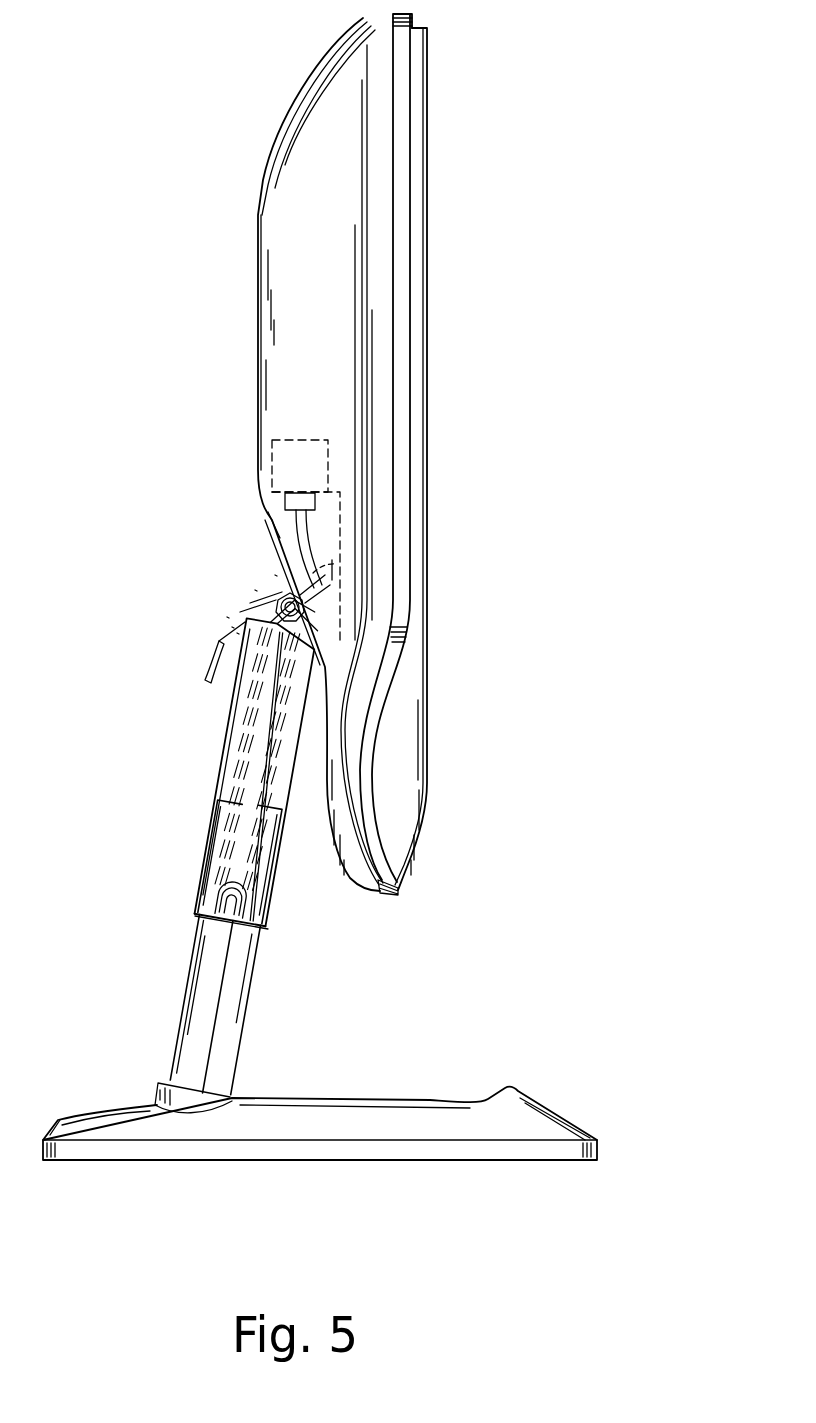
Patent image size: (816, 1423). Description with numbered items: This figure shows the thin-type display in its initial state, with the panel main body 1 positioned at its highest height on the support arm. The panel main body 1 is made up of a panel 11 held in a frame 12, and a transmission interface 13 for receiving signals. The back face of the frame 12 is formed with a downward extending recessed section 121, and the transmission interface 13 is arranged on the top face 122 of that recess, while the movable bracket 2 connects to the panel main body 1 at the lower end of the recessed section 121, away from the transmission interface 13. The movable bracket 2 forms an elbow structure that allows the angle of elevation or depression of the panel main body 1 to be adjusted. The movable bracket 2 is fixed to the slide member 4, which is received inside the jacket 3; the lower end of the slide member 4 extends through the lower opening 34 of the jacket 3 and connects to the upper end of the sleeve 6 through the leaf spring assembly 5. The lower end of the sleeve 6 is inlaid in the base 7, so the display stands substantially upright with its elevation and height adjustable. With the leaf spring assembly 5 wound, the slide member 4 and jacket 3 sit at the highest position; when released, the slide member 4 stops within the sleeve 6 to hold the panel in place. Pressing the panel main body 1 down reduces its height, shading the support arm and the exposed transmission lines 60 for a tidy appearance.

The panel main body 1 is at (402, 77).
The panel 11 is at (437, 390).
The frame 12 is at (297, 140).
The transmission interface 13 is at (303, 440).
The recessed section 121 is at (282, 560).
The top face 122 is at (273, 513).
The movable bracket 2 is at (262, 593).
The transmission lines 60 is at (205, 660).
The slide member 4 is at (250, 715).
The jacket 3 is at (214, 815).
The leaf spring assembly 5 is at (221, 892).
The sleeve 6 is at (197, 1028).
The lower opening 34 is at (265, 945).
The base 7 is at (522, 1112).